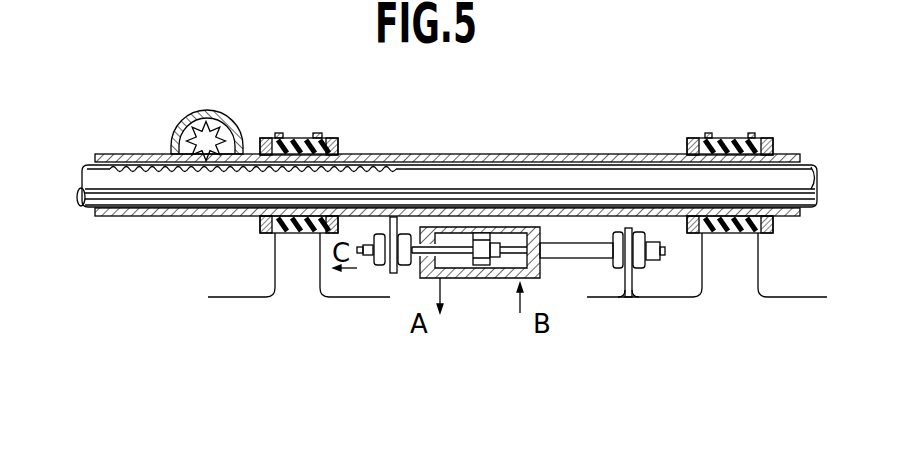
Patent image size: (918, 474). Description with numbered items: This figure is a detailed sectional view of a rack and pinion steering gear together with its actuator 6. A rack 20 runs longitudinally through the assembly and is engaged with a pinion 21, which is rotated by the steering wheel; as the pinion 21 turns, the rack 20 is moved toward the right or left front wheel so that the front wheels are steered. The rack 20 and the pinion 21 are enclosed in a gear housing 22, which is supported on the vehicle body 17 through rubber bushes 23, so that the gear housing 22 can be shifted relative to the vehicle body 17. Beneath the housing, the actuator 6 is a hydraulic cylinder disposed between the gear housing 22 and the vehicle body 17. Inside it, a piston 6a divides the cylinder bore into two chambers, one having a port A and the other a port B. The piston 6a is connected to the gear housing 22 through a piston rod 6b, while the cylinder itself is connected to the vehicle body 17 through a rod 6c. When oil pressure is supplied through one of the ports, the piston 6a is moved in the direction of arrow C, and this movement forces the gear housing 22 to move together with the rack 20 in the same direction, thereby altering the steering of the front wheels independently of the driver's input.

The rack 20 is at (574, 152).
The pinion 21 is at (188, 118).
The gear housing 22 is at (477, 152).
The bushing 23 is at (307, 135).
The vehicle body 17 is at (237, 293).
The actuator 6 is at (493, 282).
The piston 6a is at (478, 282).
The piston rod 6b is at (420, 267).
The rod 6c is at (573, 260).